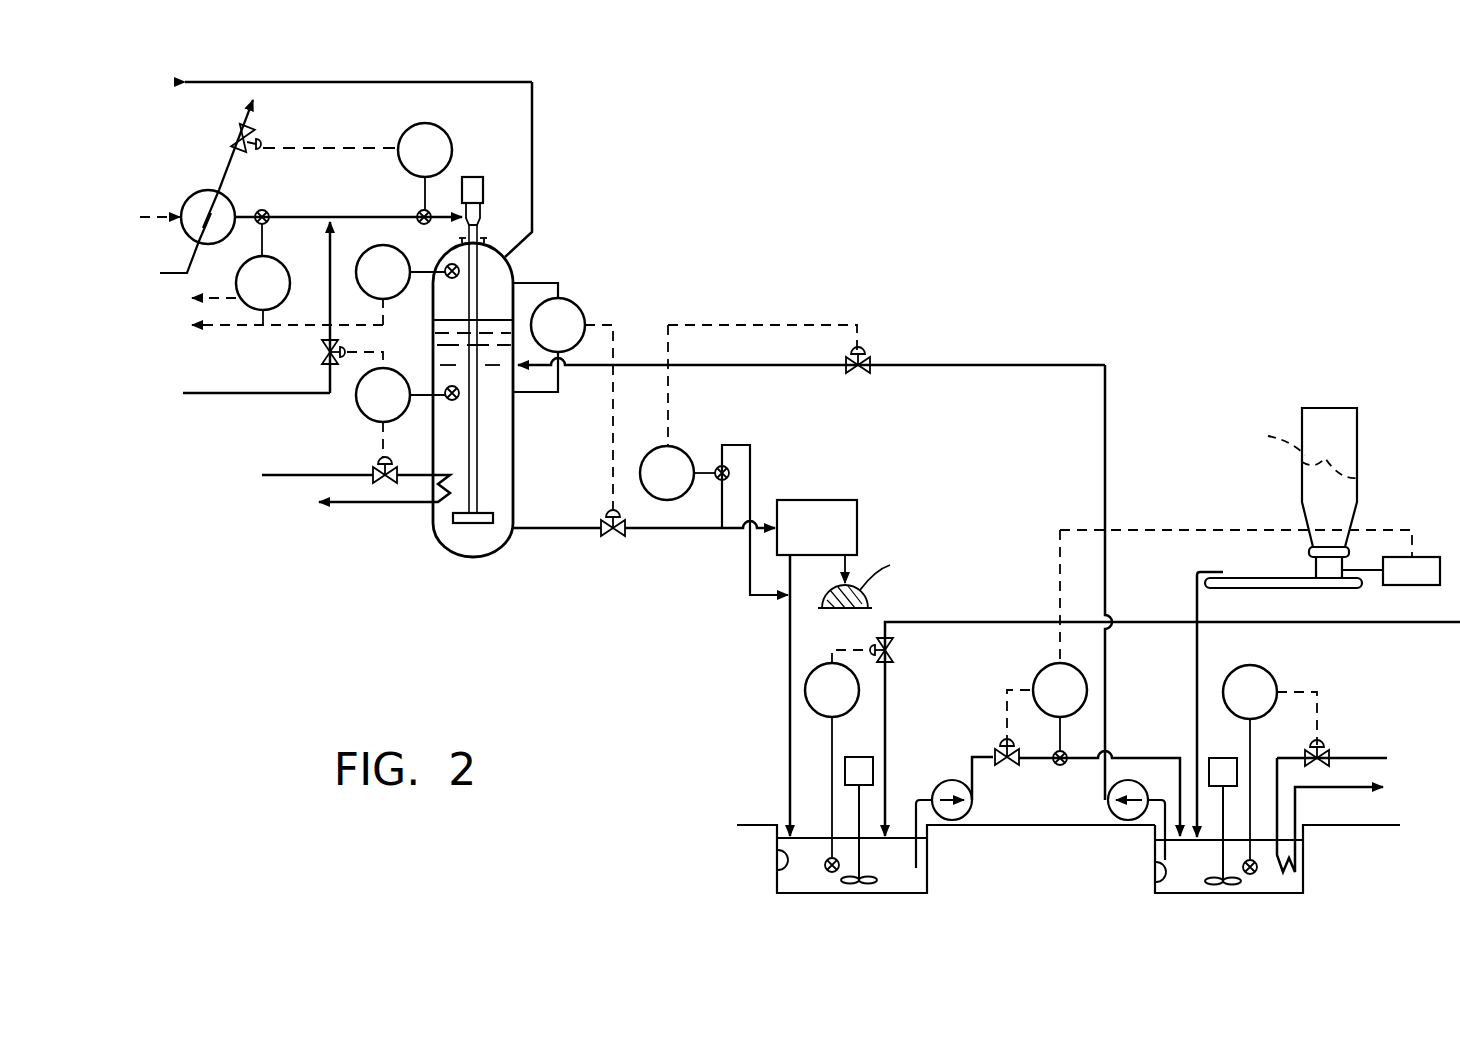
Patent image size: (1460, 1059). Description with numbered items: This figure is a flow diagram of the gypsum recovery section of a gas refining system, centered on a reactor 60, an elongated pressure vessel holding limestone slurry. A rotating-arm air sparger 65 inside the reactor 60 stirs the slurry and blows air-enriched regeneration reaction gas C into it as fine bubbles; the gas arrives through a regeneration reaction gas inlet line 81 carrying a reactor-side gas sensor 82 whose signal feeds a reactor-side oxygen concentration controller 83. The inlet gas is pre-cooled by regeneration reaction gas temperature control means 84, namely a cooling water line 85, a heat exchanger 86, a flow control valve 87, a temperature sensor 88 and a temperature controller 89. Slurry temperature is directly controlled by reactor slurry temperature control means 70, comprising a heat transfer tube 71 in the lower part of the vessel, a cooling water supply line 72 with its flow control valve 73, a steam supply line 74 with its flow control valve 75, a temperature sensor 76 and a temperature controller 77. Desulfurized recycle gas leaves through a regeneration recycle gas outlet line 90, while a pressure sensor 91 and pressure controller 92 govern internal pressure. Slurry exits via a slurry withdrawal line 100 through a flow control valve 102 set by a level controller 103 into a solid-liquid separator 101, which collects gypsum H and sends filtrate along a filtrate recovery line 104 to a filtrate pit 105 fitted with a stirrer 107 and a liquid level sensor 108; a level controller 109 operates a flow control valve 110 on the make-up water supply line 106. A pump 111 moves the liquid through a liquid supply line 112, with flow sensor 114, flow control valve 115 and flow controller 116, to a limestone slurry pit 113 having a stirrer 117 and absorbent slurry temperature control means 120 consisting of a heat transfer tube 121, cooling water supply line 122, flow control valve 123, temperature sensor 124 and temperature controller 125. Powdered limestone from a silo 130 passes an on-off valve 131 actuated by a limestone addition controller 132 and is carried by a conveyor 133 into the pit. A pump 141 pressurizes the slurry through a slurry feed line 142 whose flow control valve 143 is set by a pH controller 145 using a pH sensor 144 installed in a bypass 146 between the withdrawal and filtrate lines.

The reactor 60 is at (450, 555).
The rotating-arm air sparger 65 is at (483, 524).
The reactor slurry temperature control means 70 is at (315, 538).
The heat transfer tube 71 is at (437, 500).
The cooling water supply line 72 is at (290, 480).
The flow control valve 73 is at (372, 468).
The steam supply line 74 is at (206, 397).
The flow control valve 75 is at (320, 352).
The temperature sensor 76 is at (460, 401).
The temperature controller 77 is at (358, 405).
The regeneration reaction gas inlet line 81 is at (325, 210).
The reactor-side gas sensor 82 is at (265, 209).
The reactor-side oxygen concentration controller 83 is at (264, 318).
The regeneration reaction gas temperature control means 84 is at (482, 140).
The cooling water line 85 is at (232, 152).
The heat exchanger 86 is at (190, 200).
The flow control valve 87 is at (240, 133).
The temperature sensor 88 is at (415, 210).
The temperature controller 89 is at (422, 123).
The regeneration recycle gas outlet line 90 is at (534, 206).
The pressure sensor 91 is at (448, 280).
The pressure controller 92 is at (378, 247).
The slurry withdrawal line 100 is at (553, 531).
The solid-liquid separator 101 is at (810, 500).
The flow control valve 102 is at (615, 536).
The level controller 103 is at (575, 305).
The filtrate recovery line 104 is at (790, 660).
The filtrate pit 105 is at (777, 856).
The make-up water supply line 106 is at (1020, 620).
The stirrer 107 is at (880, 878).
The liquid level sensor 108 is at (826, 870).
The level controller 109 is at (805, 690).
The flow control valve 110 is at (897, 648).
The pump 111 is at (970, 813).
The liquid supply line 112 is at (1148, 758).
The limestone slurry pit 113 is at (1155, 868).
The flow sensor 114 is at (1058, 765).
The flow control valve 115 is at (1000, 745).
The flow controller 116 is at (1040, 672).
The stirrer 117 is at (1210, 885).
The absorbent slurry temperature control means 120 is at (1407, 702).
The heat transfer tube 121 is at (1300, 855).
The cooling water supply line 122 is at (1350, 758).
The flow control valve 123 is at (1322, 745).
The temperature sensor 124 is at (1257, 876).
The temperature controller 125 is at (1256, 666).
The silo 130 is at (1357, 445).
The on-off valve 131 is at (1312, 550).
The limestone addition controller 132 is at (1430, 557).
The conveyor 133 is at (1235, 578).
The pump 141 is at (1110, 810).
The slurry feed line 142 is at (975, 365).
The flow control valve 143 is at (875, 352).
The pH sensor 144 is at (720, 466).
The pH controller 145 is at (650, 456).
The bypass 146 is at (748, 565).